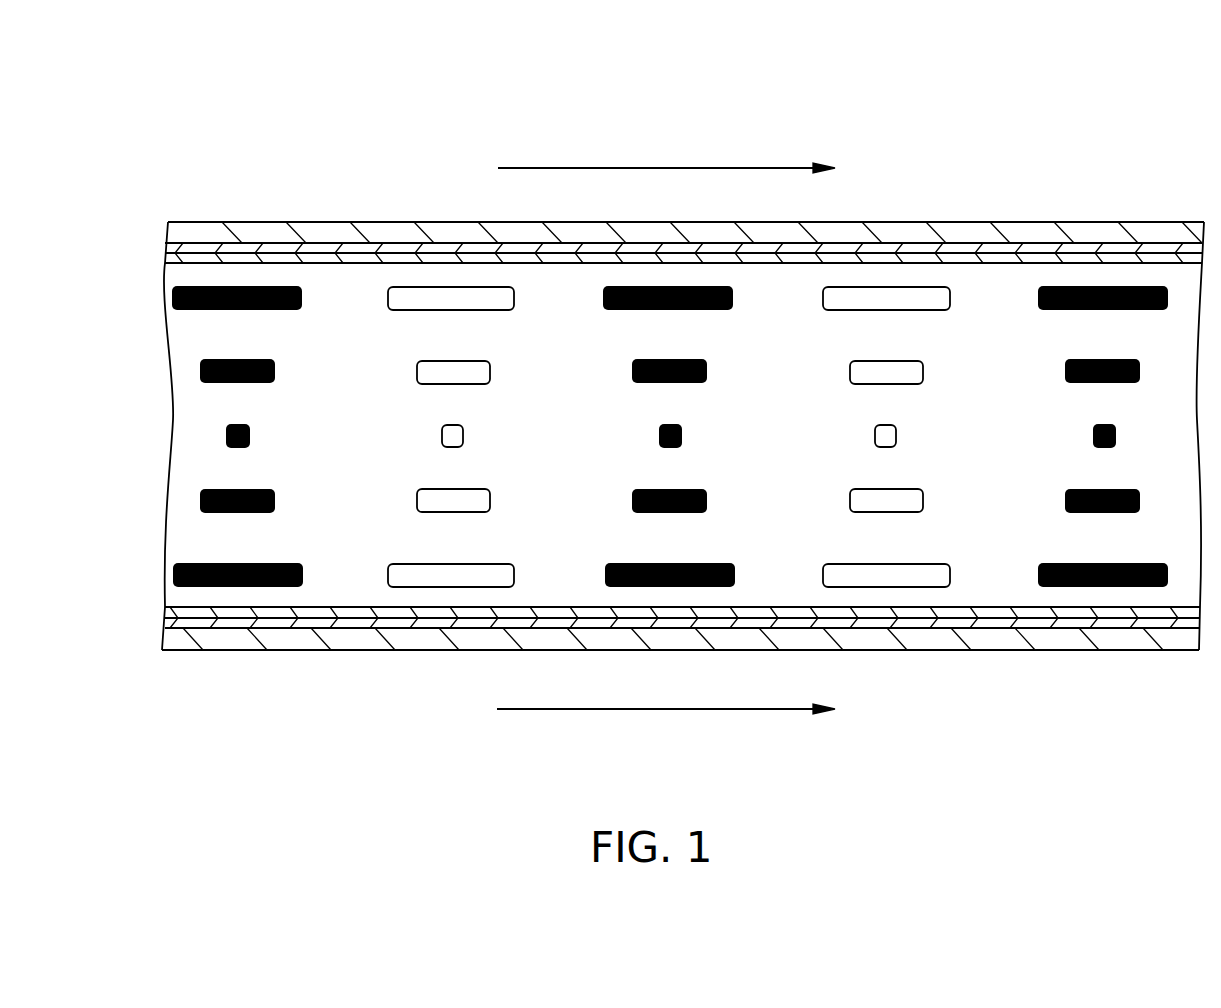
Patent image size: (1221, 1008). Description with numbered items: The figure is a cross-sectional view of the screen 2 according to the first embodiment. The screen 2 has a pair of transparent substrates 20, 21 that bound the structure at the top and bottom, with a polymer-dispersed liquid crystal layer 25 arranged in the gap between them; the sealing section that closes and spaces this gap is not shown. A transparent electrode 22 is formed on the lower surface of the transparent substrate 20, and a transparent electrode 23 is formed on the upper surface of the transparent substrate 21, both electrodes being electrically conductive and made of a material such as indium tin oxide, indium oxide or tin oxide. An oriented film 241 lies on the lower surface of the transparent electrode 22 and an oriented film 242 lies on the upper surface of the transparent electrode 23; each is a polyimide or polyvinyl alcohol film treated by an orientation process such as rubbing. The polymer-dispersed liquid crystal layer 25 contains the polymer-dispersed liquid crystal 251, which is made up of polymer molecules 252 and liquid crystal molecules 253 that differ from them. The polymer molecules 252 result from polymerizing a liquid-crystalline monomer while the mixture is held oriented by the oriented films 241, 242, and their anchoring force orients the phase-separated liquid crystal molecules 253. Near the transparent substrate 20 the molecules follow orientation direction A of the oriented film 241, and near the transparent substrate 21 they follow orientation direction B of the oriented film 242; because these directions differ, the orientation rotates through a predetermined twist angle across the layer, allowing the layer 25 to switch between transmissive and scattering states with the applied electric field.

The screen 2 is at (1073, 126).
The transparent substrate 20 is at (392, 242).
The transparent substrate 21 is at (428, 640).
The transparent electrode 22 is at (888, 248).
The transparent electrode 23 is at (955, 625).
The oriented film 241 is at (238, 260).
The oriented film 242 is at (1118, 615).
The polymer-dispersed liquid crystal layer 25 is at (635, 461).
The polymer-dispersed liquid crystal 251 is at (670, 461).
The polymer molecules 252 is at (1120, 360).
The liquid crystal molecules 253 is at (905, 500).